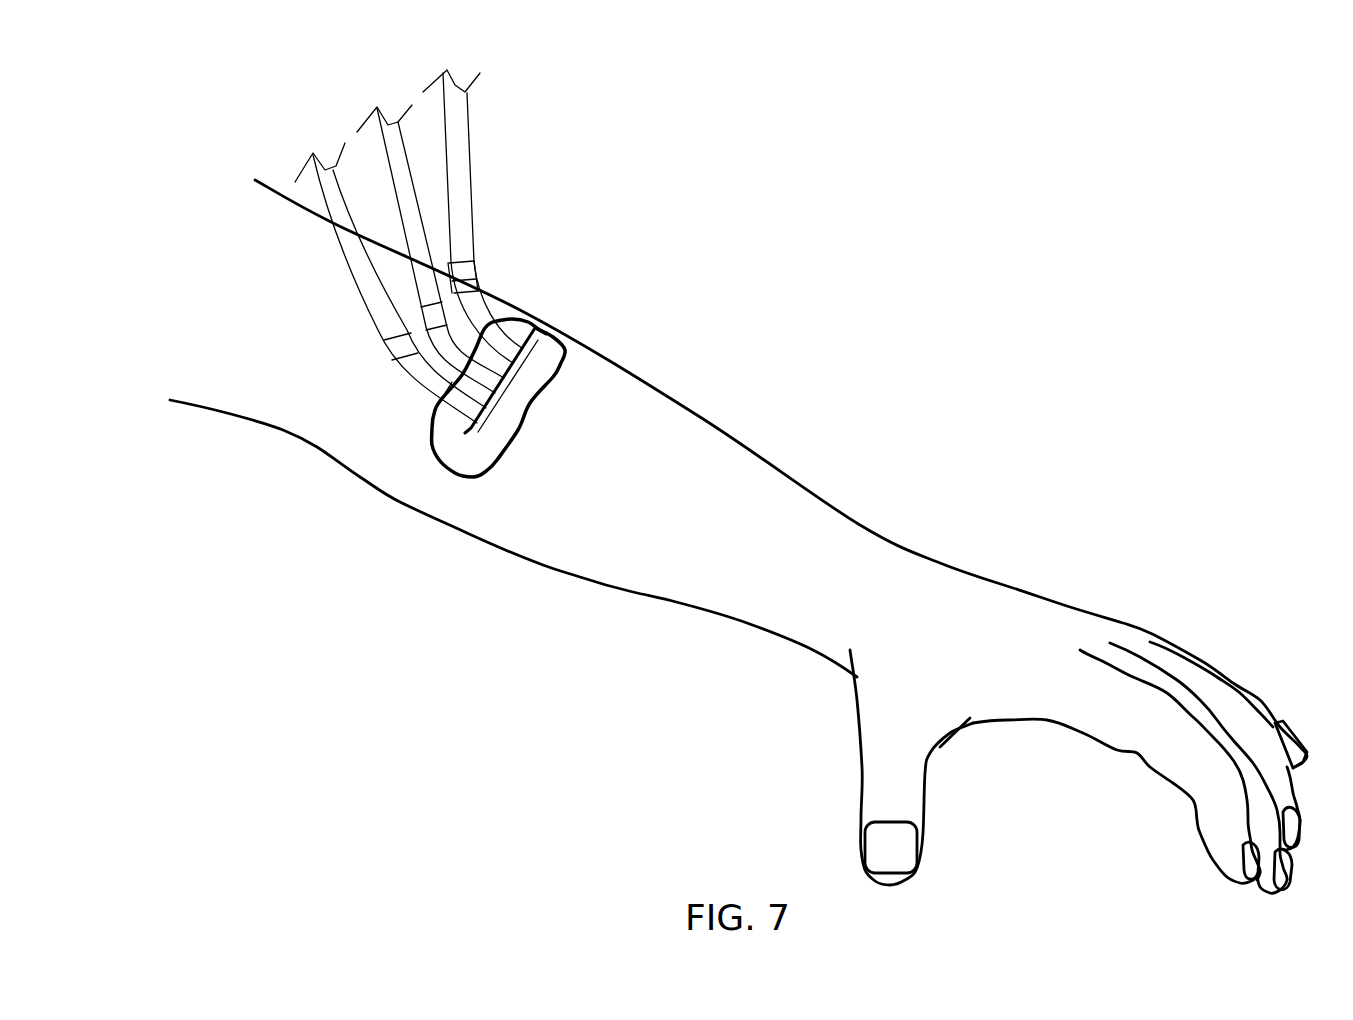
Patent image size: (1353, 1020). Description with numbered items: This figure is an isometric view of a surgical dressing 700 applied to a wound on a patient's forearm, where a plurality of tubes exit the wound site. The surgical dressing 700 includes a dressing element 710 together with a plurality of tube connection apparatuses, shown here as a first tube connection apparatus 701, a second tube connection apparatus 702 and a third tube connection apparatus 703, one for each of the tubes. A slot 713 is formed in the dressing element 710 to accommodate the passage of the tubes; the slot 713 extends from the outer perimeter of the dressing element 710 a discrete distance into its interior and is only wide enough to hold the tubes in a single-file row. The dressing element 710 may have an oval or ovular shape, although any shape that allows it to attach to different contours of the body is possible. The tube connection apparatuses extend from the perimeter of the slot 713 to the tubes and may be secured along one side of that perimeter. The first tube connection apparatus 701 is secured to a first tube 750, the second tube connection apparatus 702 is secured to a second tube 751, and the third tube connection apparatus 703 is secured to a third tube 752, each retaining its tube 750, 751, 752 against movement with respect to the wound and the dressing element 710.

The surgical dressing 700 is at (573, 398).
The first tube connection apparatus 701 is at (400, 380).
The second tube connection apparatus 702 is at (437, 413).
The third tube connection apparatus 703 is at (480, 287).
The dressing element 710 is at (517, 410).
The slot 713 is at (555, 310).
The first tube 750 is at (347, 227).
The second tube 751 is at (403, 178).
The third tube 752 is at (455, 208).